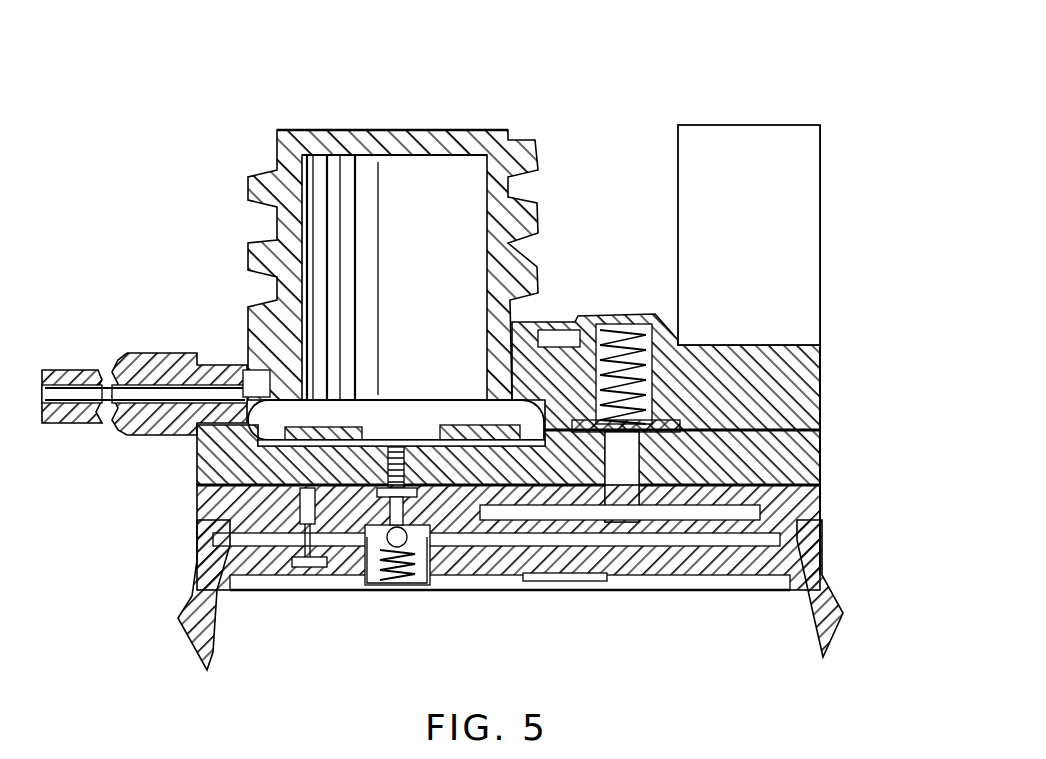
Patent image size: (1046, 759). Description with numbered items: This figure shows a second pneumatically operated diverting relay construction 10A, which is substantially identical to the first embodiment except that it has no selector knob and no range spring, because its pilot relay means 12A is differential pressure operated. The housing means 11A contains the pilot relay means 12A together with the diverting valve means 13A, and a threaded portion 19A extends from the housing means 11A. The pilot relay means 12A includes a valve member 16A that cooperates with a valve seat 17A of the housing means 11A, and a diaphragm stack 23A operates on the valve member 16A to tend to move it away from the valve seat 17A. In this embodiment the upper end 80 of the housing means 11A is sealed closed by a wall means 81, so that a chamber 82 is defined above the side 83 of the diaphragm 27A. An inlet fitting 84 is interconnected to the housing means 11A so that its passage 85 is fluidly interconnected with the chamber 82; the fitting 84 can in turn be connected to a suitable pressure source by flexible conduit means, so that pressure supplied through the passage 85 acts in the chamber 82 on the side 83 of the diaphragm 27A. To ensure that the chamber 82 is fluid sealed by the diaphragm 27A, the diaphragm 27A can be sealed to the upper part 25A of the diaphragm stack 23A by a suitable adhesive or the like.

The pneumatically operated diverting relay construction 10A is at (805, 83).
The housing means 11A is at (808, 392).
The pilot relay means 12A is at (340, 523).
The diverting valve means 13A is at (800, 499).
The valve member 16A is at (395, 548).
The valve seat 17A is at (375, 540).
The threaded portion 19A is at (701, 222).
The diaphragm stack 23A is at (360, 464).
The upper part of the diaphragm stack 25A is at (395, 425).
The diaphragm 27A is at (268, 438).
The upper end 80 is at (435, 162).
The wall means 81 is at (398, 130).
The chamber 82 is at (362, 192).
The side of the diaphragm 83 is at (514, 424).
The inlet fitting 84 is at (137, 363).
The passage 85 is at (167, 383).